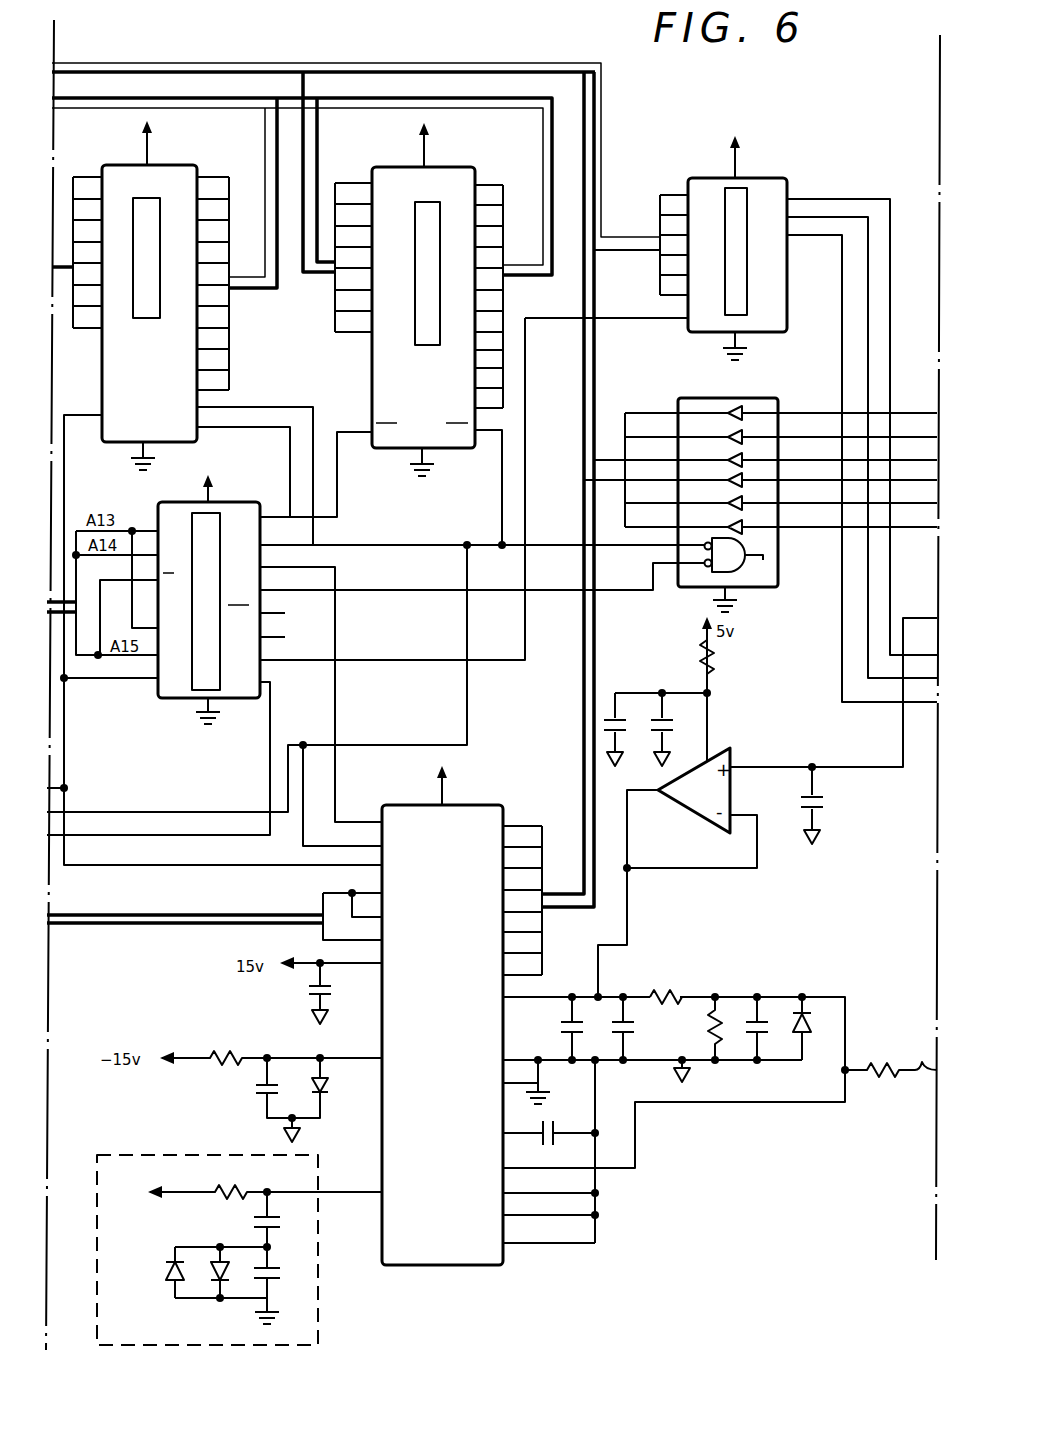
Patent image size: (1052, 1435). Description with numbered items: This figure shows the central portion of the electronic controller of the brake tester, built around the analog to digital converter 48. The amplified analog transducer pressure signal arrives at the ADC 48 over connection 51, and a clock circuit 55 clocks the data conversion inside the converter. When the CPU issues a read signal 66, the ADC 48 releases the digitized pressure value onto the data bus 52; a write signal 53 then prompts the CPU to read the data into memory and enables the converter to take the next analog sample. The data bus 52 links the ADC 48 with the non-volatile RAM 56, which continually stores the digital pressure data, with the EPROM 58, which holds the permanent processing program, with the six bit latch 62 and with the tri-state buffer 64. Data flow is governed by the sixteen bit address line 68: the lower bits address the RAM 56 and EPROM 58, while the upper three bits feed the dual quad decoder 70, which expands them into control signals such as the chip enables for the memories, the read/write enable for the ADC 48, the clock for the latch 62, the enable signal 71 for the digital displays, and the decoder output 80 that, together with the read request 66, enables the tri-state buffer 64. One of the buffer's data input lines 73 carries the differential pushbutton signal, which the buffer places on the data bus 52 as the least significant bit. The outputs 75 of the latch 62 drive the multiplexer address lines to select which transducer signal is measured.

The analog to digital converter 48 is at (502, 806).
The connection 51 is at (917, 1072).
The data bus 52 is at (514, 63).
The write signal 53 is at (70, 790).
The clock circuit 55 is at (178, 1154).
The non-volatile RAM 56 is at (192, 166).
The EPROM 58 is at (372, 376).
The six bit latch 62 is at (757, 178).
The tri-state buffer 64 is at (781, 485).
The read signal 66 is at (172, 812).
The sixteen bit address line 68 is at (388, 105).
The dual quad decoder 70 is at (183, 698).
The enable signal for the digital displays 71 is at (274, 712).
The data input lines 73 is at (806, 440).
The outputs of the six bit latch 75 is at (836, 214).
The decoder output 80 is at (418, 592).